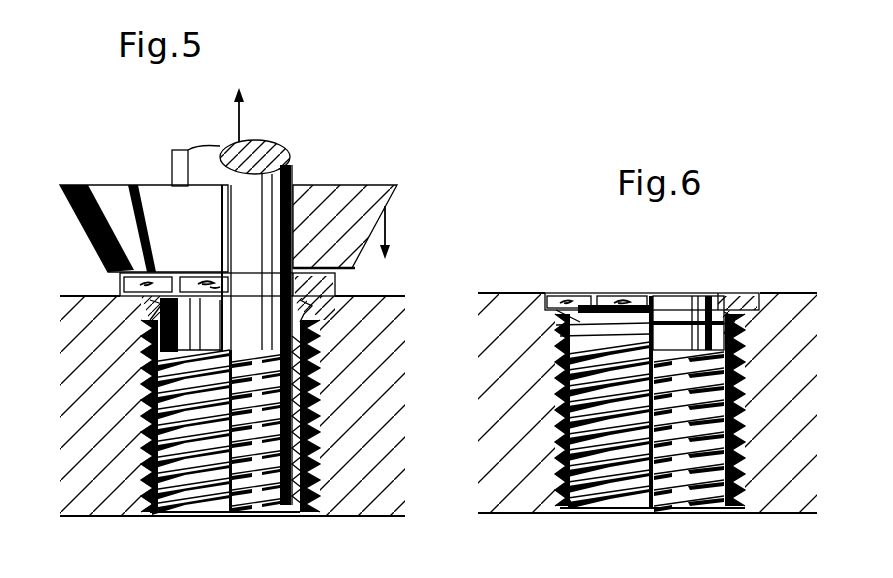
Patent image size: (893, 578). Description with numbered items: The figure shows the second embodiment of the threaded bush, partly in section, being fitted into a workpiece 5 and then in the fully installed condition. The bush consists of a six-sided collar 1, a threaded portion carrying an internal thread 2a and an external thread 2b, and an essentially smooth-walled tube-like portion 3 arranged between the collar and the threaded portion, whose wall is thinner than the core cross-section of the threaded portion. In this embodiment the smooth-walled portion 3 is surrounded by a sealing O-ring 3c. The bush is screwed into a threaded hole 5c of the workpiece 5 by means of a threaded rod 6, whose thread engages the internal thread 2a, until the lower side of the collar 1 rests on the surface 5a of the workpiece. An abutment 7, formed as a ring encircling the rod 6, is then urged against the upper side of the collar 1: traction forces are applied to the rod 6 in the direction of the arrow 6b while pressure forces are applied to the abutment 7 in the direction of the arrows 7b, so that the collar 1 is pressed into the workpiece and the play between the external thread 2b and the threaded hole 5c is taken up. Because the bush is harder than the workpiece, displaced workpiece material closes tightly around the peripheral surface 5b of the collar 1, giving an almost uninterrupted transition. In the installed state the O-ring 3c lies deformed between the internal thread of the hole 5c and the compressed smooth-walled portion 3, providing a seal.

In FIG. 5, the collar 1 is at (328, 283).
In FIG. 6, the collar 1 is at (735, 296).
In FIG. 5, the internal thread 2a is at (293, 508).
In FIG. 6, the internal thread 2a is at (702, 512).
In FIG. 5, the external thread 2b is at (330, 460).
In FIG. 6, the external thread 2b is at (745, 470).
In FIG. 5, the tube-like portion 3 is at (150, 328).
In FIG. 5, the sealing O-ring 3c is at (318, 318).
In FIG. 6, the sealing O-ring 3c is at (750, 318).
In FIG. 5, the workpiece 5 is at (106, 500).
In FIG. 6, the workpiece 5 is at (503, 500).
In FIG. 6, the surface of the workpiece 5a is at (503, 292).
In FIG. 6, the peripheral surface of the collar 5b is at (539, 292).
In FIG. 5, the threaded hole 5c is at (149, 512).
In FIG. 6, the threaded hole 5c is at (568, 512).
In FIG. 5, the threaded rod 6 is at (275, 156).
In FIG. 5, the arrow indicating traction force direction 6b is at (252, 115).
In FIG. 5, the abutment 7 is at (350, 187).
In FIG. 5, the arrows indicating pressure force direction 7b is at (399, 232).